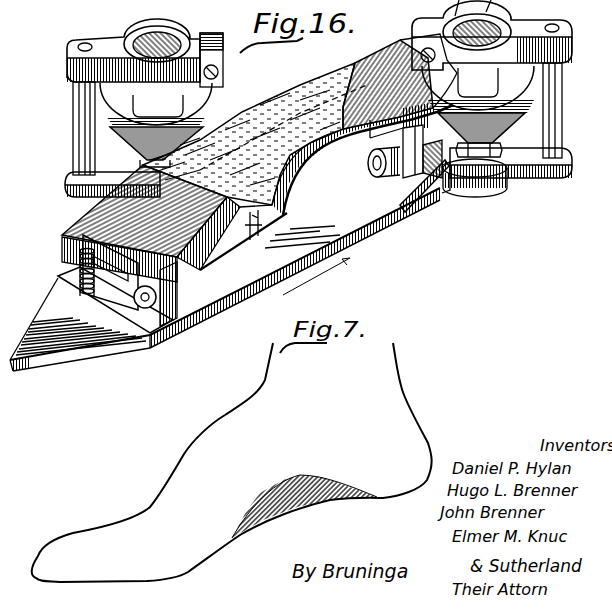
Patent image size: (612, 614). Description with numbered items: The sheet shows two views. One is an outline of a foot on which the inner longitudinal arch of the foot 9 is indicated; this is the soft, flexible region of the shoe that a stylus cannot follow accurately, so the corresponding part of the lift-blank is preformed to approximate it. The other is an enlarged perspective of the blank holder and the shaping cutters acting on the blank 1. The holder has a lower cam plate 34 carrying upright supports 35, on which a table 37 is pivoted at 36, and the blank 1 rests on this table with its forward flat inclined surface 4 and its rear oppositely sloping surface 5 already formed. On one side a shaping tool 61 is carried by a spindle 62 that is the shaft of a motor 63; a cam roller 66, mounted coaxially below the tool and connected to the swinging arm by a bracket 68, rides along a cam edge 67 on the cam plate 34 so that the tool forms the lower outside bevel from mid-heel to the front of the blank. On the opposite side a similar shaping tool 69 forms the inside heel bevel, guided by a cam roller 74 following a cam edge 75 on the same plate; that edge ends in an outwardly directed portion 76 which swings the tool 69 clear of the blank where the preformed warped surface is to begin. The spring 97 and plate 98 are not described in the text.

In FIG. 16, the blank 1 is at (225, 247).
In FIG. 16, the flat inclined surface 4 is at (135, 223).
In FIG. 16, the oppositely sloping surface 5 is at (388, 70).
In FIG. 7, the inner longitudinal arch of the foot 9 is at (268, 530).
In FIG. 16, the lower cam plate 34 is at (248, 283).
In FIG. 16, the upright supports 35 is at (407, 175).
In FIG. 16, the pivot 36 is at (375, 165).
In FIG. 16, the table 37 is at (250, 233).
In FIG. 16, the shaping tool 61 is at (200, 120).
In FIG. 16, the spindle 62 is at (165, 37).
In FIG. 16, the motor 63 is at (139, 67).
In FIG. 16, the cam roller 66 is at (120, 224).
In FIG. 16, the cam edge 67 is at (307, 145).
In FIG. 16, the bracket 68 is at (82, 105).
In FIG. 16, the shaping tool 69 is at (528, 104).
In FIG. 16, the cam roller 74 is at (470, 192).
In FIG. 16, the cam edge 75 is at (445, 176).
In FIG. 16, the outwardly directed portion 76 is at (423, 192).
In FIG. 16, the spring 97 is at (82, 282).
In FIG. 16, the plate 98 is at (125, 265).